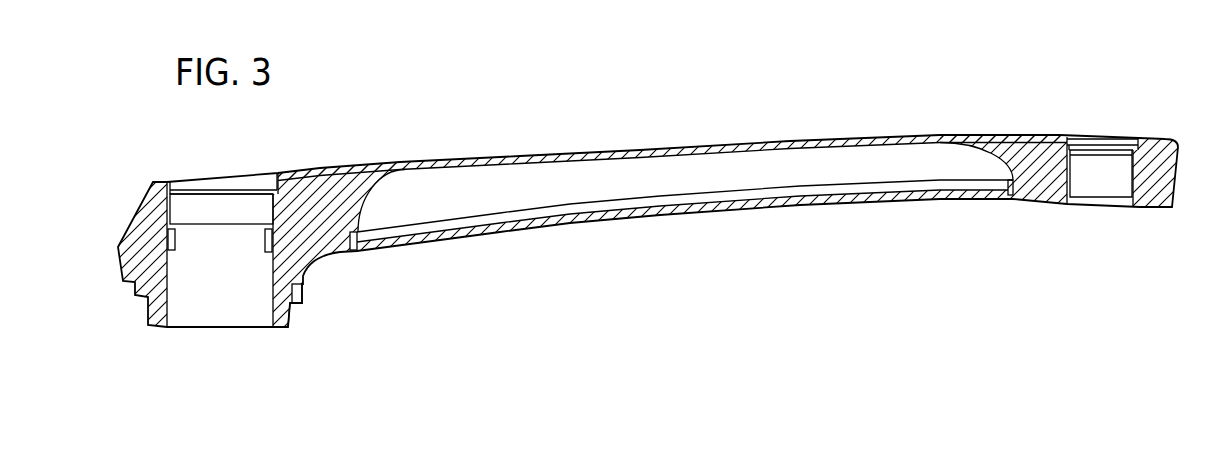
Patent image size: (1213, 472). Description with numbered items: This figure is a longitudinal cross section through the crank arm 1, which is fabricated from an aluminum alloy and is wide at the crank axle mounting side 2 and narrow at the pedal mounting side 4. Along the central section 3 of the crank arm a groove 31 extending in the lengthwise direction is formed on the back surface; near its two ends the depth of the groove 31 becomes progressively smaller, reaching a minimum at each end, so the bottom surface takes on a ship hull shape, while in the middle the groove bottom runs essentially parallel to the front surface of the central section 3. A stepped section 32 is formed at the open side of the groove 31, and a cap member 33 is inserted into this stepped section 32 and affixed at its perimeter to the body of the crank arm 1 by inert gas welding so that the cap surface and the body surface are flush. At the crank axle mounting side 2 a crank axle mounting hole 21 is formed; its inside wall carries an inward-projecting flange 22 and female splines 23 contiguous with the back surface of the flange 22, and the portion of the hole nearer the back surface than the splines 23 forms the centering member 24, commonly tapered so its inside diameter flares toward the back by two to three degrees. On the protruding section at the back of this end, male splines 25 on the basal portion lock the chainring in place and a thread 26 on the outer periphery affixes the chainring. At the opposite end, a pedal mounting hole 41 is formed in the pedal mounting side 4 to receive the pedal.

The crank arm 1 is at (480, 149).
The crank axle mounting side 2 is at (150, 207).
The crank axle mounting hole 21 is at (178, 182).
The flange 22 is at (195, 224).
The female splines 23 is at (175, 250).
The centering member 24 is at (265, 318).
The male splines 25 is at (303, 293).
The thread 26 is at (288, 316).
The central section 3 is at (643, 150).
The groove 31 is at (855, 157).
The stepped section 32 is at (348, 235).
The cap member 33 is at (907, 198).
The pedal mounting side 4 is at (1167, 140).
The pedal mounting hole 41 is at (1083, 152).